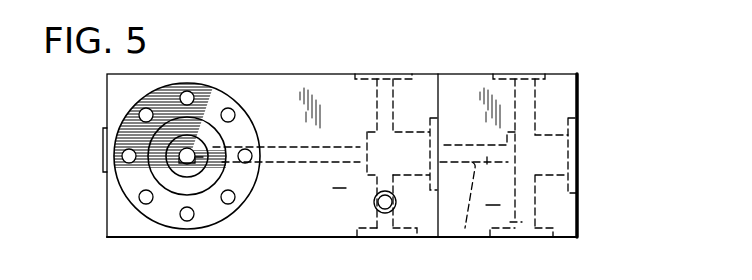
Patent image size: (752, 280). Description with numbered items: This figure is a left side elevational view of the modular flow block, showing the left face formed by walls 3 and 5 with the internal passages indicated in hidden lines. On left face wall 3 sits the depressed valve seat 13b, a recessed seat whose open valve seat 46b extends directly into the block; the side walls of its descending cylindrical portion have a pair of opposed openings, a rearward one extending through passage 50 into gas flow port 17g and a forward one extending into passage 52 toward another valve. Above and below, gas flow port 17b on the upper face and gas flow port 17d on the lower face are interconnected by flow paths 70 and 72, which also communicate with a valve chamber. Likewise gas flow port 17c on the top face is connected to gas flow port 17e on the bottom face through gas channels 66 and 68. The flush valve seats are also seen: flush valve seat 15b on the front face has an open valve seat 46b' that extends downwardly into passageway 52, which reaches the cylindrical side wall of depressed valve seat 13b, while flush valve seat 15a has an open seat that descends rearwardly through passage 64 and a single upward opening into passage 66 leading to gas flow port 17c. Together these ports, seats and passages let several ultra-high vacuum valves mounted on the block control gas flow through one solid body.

The wall 3 is at (323, 138).
The wall 5 is at (504, 150).
The depressed valve seat 13b is at (128, 187).
The flush valve seat 15a is at (578, 140).
The flush valve seat 15b is at (433, 128).
The gas flow port 17b is at (383, 78).
The gas flow port 17c is at (532, 85).
The gas flow port 17d is at (398, 238).
The gas flow port 17e is at (544, 238).
The gas flow port 17g is at (110, 133).
The open valve seat 46b is at (220, 103).
The open valve seat 46b' is at (490, 130).
The passage 50 is at (113, 176).
The passage 52 is at (281, 165).
The passage 64 is at (466, 238).
The gas channel 66 is at (567, 76).
The gas channel 68 is at (537, 200).
The flow path 70 is at (395, 102).
The flow path 72 is at (378, 219).